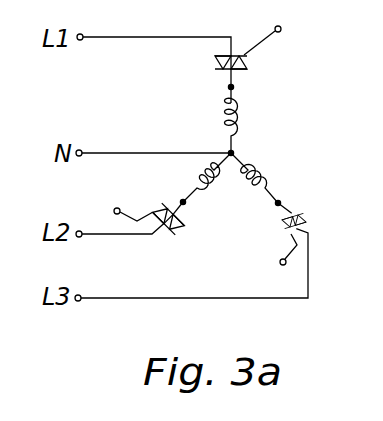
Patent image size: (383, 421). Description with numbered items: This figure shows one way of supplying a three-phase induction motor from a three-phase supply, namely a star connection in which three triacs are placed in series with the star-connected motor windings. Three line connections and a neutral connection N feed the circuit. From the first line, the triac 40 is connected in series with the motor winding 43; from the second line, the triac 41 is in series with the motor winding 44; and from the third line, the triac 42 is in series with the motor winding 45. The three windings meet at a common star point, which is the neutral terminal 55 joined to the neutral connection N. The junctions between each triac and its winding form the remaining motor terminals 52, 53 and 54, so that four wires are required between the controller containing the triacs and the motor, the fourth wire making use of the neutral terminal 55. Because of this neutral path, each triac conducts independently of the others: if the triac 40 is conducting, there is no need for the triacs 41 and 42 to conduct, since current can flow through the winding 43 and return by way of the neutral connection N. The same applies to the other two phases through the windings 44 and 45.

The triac 40 is at (243, 62).
The triac 41 is at (178, 229).
The triac 42 is at (303, 205).
The induction motor winding 43 is at (223, 113).
The induction motor winding 44 is at (198, 182).
The induction motor winding 45 is at (267, 177).
The motor terminal 52 is at (234, 87).
The motor terminal 53 is at (186, 203).
The motor terminal 54 is at (276, 205).
The neutral terminal 55 is at (233, 152).